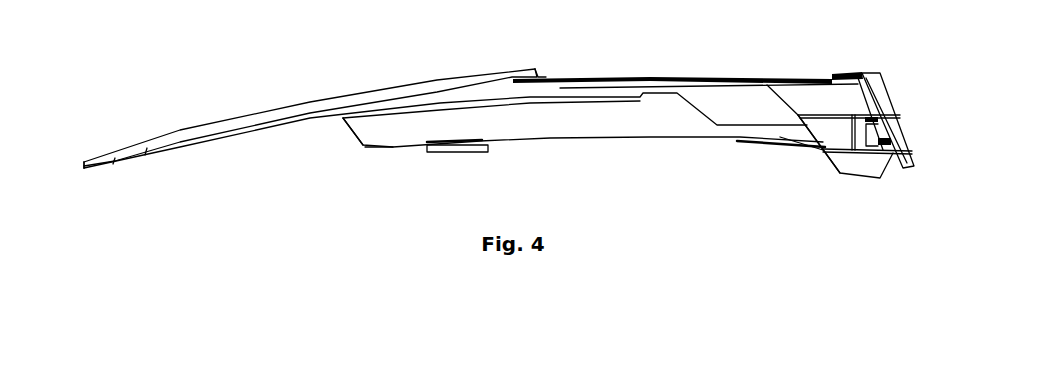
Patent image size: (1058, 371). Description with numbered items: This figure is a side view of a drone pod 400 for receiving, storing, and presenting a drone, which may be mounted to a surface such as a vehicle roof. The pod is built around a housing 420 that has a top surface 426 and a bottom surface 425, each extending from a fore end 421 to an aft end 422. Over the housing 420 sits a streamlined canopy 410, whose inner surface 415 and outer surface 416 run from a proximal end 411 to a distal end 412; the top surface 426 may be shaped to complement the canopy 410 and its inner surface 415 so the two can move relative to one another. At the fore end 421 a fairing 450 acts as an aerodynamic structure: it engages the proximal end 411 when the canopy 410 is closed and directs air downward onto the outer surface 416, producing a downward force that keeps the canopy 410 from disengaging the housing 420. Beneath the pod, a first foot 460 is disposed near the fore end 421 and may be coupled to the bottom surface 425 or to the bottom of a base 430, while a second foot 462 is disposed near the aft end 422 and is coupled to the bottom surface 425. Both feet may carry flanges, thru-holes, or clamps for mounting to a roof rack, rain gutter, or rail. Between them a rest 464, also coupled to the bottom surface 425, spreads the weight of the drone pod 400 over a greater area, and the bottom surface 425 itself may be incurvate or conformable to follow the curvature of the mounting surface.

The drone pod 400 is at (443, 20).
The canopy 410 is at (183, 128).
The proximal end 411 is at (556, 70).
The distal end 412 is at (64, 169).
The inner surface 415 is at (213, 143).
The outer surface 416 is at (311, 103).
The housing 420 is at (402, 133).
The fore end 421 is at (928, 90).
The aft end 422 is at (320, 139).
The bottom surface 425 is at (613, 140).
The top surface 426 is at (647, 77).
The base 430 is at (823, 153).
The fairing 450 is at (842, 74).
The first foot 460 is at (852, 175).
The second foot 462 is at (438, 153).
The rest 464 is at (747, 143).